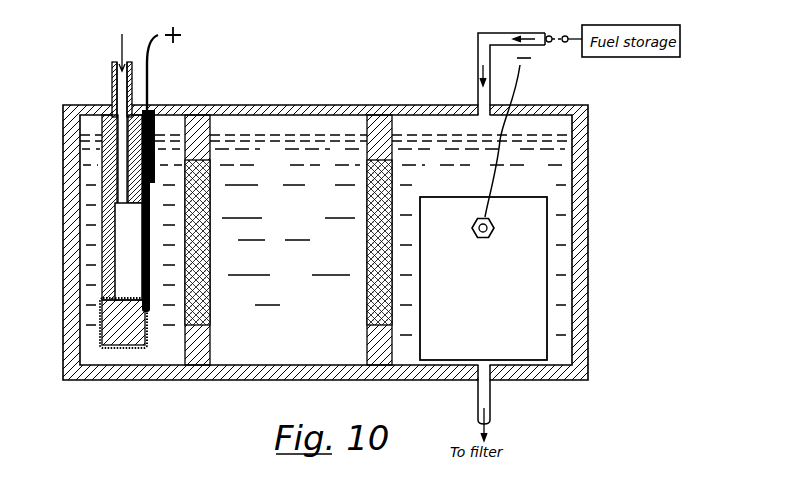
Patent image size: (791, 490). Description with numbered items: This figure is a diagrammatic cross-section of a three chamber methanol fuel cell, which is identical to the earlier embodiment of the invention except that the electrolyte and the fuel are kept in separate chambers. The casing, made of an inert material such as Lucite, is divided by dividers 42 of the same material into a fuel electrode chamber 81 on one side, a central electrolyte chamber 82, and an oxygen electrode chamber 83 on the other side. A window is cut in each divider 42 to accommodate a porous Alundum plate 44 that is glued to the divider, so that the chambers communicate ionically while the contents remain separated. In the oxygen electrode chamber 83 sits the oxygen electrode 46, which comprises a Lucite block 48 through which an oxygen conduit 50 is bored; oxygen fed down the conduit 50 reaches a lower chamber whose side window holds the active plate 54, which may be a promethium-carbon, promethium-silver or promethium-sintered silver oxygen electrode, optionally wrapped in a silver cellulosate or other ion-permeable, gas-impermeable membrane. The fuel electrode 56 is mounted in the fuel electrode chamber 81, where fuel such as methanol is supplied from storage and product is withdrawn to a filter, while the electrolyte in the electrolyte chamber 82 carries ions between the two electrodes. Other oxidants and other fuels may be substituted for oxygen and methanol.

The divider 42 is at (210, 108).
The porous Alundum plate 44 is at (367, 240).
The oxygen electrode 46 is at (103, 330).
The Lucite block 48 is at (140, 108).
The oxygen conduit 50 is at (102, 168).
The active plate 54 is at (142, 250).
The fuel electrode 56 is at (538, 323).
The fuel electrode chamber 81 is at (528, 123).
The electrolyte chamber 82 is at (297, 122).
The oxygen electrode chamber 83 is at (175, 123).